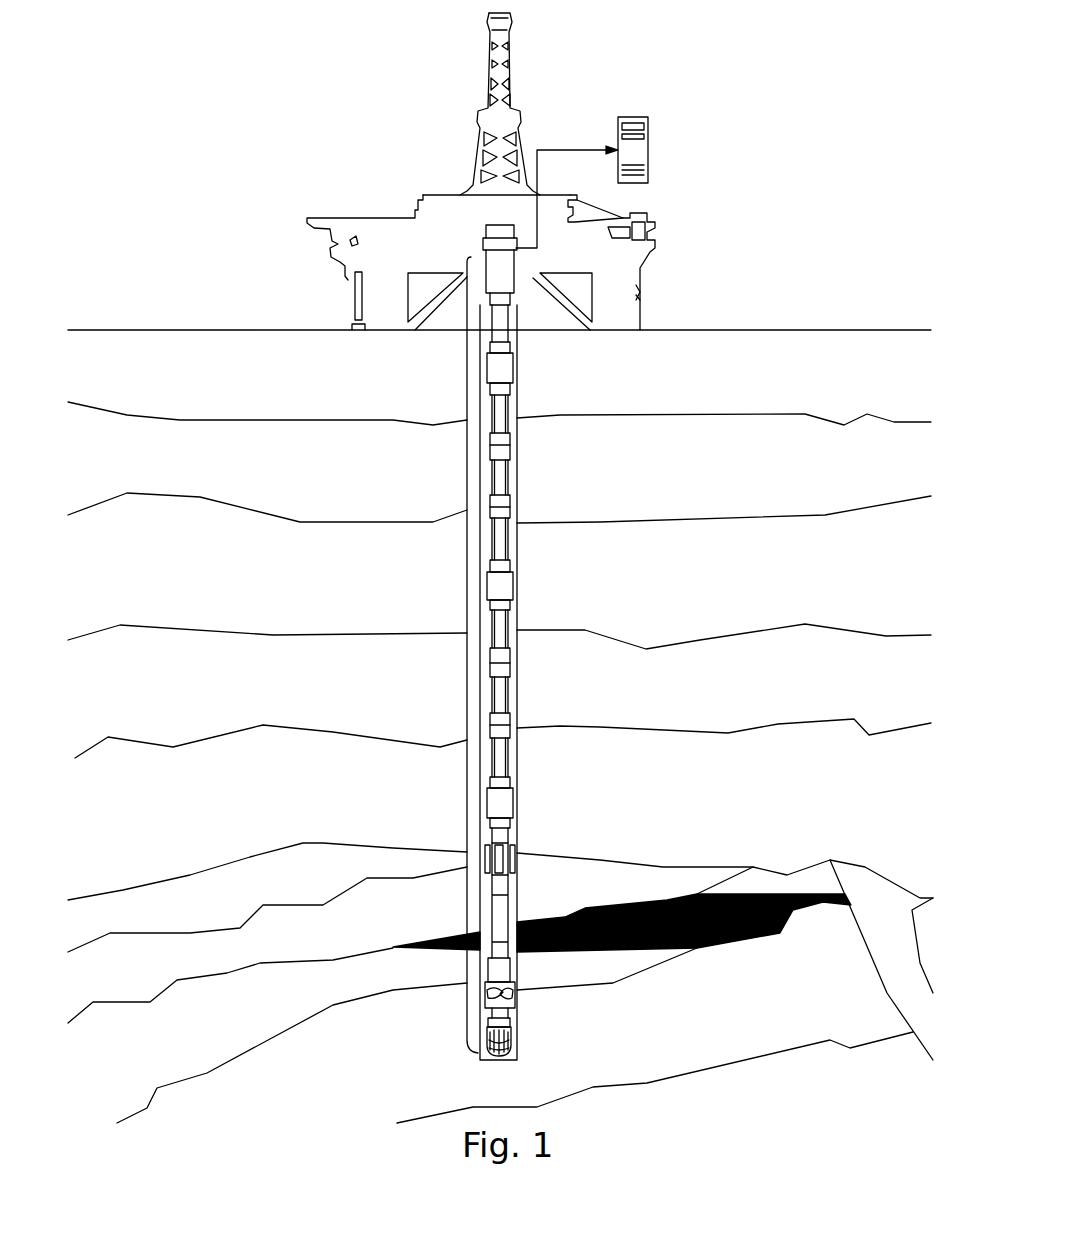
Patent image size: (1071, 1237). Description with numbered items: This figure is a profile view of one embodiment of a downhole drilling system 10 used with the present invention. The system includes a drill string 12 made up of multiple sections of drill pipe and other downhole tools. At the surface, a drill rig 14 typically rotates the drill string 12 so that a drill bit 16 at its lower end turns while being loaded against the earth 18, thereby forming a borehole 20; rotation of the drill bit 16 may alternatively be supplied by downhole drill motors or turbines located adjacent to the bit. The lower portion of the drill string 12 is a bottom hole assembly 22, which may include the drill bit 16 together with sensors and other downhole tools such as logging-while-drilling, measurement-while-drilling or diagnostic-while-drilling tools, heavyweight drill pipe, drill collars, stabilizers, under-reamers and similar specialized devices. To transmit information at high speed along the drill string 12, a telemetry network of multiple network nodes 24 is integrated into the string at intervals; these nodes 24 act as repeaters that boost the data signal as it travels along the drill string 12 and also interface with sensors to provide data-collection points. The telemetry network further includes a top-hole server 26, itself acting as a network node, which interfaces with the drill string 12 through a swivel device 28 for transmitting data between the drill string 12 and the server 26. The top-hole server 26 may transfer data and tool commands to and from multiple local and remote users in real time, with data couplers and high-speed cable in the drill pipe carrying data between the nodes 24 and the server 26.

The downhole drilling system 10 is at (205, 50).
The drill string 12 is at (468, 637).
The drill rig 14 is at (448, 206).
The drill bit 16 is at (502, 1052).
The earth 18 is at (315, 381).
The borehole 20 is at (510, 693).
The bottom hole assembly 22 is at (527, 1052).
The network nodes 24 is at (502, 373).
The top-hole server 26 is at (633, 117).
The swivel device 28 is at (500, 245).